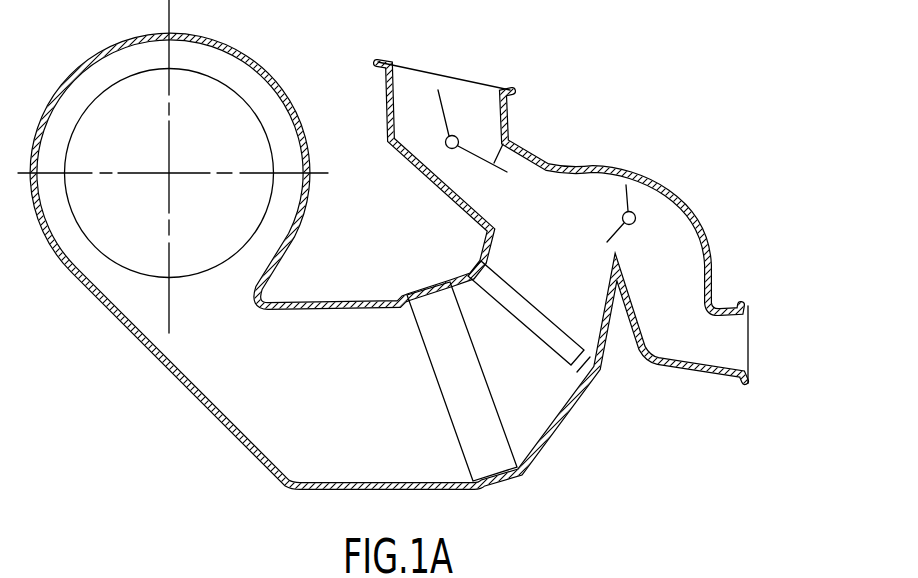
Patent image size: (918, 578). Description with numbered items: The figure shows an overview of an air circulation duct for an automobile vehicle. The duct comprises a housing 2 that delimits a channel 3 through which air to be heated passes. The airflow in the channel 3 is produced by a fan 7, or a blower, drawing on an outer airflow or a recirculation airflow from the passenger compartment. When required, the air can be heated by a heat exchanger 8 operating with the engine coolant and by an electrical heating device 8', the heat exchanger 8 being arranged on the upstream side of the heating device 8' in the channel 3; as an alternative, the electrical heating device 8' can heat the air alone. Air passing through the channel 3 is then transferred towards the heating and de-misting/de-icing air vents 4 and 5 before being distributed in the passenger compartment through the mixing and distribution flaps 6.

The housing 2 is at (185, 394).
The channel 3 is at (300, 395).
The heating and de-misting/de-icing air vent 4 is at (470, 80).
The heating and de-misting/de-icing air vent 5 is at (751, 332).
The mixing and distribution flap 6 is at (507, 139).
The fan 7 is at (105, 119).
The heat exchanger 8 is at (462, 381).
The electrical heating device 8' is at (529, 329).